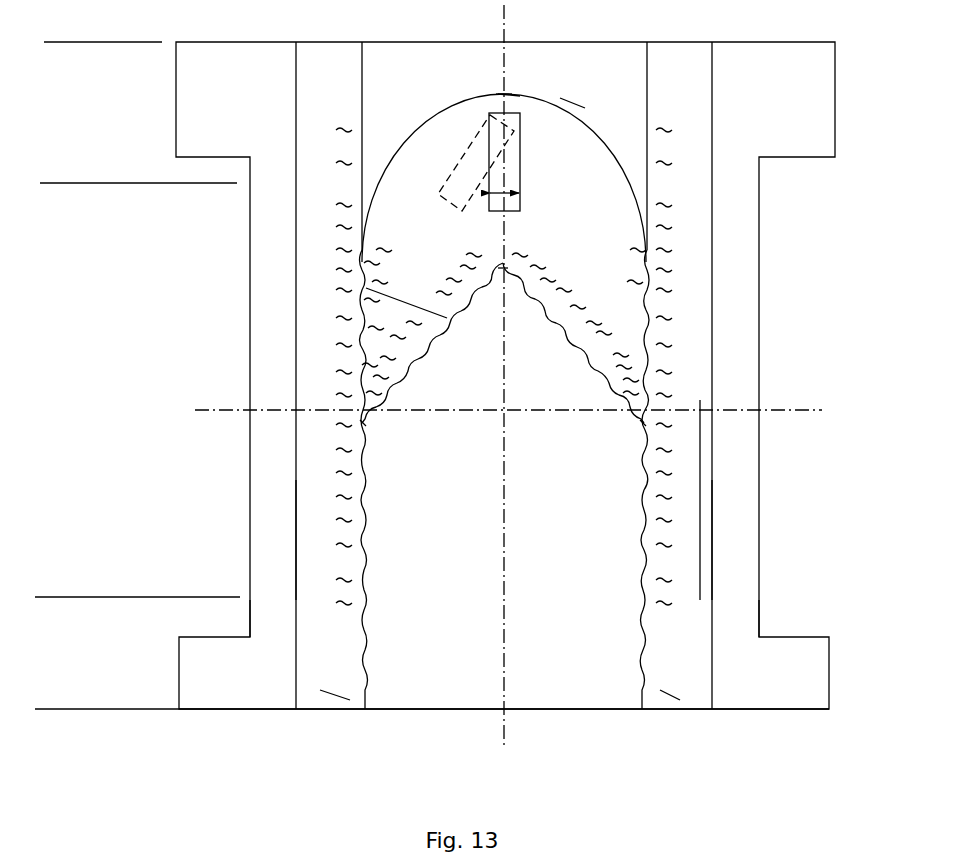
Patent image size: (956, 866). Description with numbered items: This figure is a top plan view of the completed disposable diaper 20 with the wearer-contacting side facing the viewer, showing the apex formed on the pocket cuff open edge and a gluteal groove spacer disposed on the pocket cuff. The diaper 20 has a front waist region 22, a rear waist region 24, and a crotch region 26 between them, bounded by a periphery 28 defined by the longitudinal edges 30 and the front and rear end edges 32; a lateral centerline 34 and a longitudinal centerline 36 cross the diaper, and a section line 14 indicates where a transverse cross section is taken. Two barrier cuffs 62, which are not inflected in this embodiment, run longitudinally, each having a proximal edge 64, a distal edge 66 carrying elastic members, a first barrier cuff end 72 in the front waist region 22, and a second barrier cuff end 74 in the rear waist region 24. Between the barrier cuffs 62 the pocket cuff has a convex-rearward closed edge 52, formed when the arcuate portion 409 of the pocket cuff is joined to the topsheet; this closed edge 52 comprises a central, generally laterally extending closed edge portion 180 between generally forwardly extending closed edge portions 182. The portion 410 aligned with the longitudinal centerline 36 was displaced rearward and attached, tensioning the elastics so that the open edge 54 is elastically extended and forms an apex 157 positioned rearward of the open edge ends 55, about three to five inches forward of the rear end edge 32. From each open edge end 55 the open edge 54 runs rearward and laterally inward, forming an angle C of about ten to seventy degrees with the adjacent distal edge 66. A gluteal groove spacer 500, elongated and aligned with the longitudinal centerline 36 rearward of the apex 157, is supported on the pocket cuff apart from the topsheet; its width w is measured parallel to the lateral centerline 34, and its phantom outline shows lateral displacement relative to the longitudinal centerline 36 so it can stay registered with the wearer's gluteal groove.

The section line 14- 14 is at (512, 14).
The diaper 20 is at (776, 291).
The front waist region 22 is at (52, 598).
The rear waist region 24 is at (52, 43).
The crotch region 26 is at (52, 184).
The periphery 28 is at (248, 637).
The longitudinal edges 30 is at (248, 385).
The end edges 32 is at (538, 710).
The lateral centerline 34 is at (793, 410).
The longitudinal centerline 36 is at (500, 680).
The pocket cuff closed edge 52 is at (442, 112).
The open edge 54 is at (410, 370).
The open edge ends 55 is at (368, 428).
The barrier cuff 62 is at (697, 498).
The proximal edge 64 is at (296, 552).
The distal edge 66 is at (365, 593).
The first barrier cuff end 72 is at (338, 697).
The second barrier cuff end 74 is at (340, 72).
The apex 157 is at (508, 263).
The central closed edge portion 180 is at (503, 94).
The forwardly extending closed edge portions 182 is at (366, 240).
The portion of the pocket cuff 409 is at (572, 104).
The portion of the pocket cuff 410 is at (512, 90).
The gluteal groove spacer 500 is at (522, 150).
The angle C is at (367, 288).
The width W w is at (505, 190).